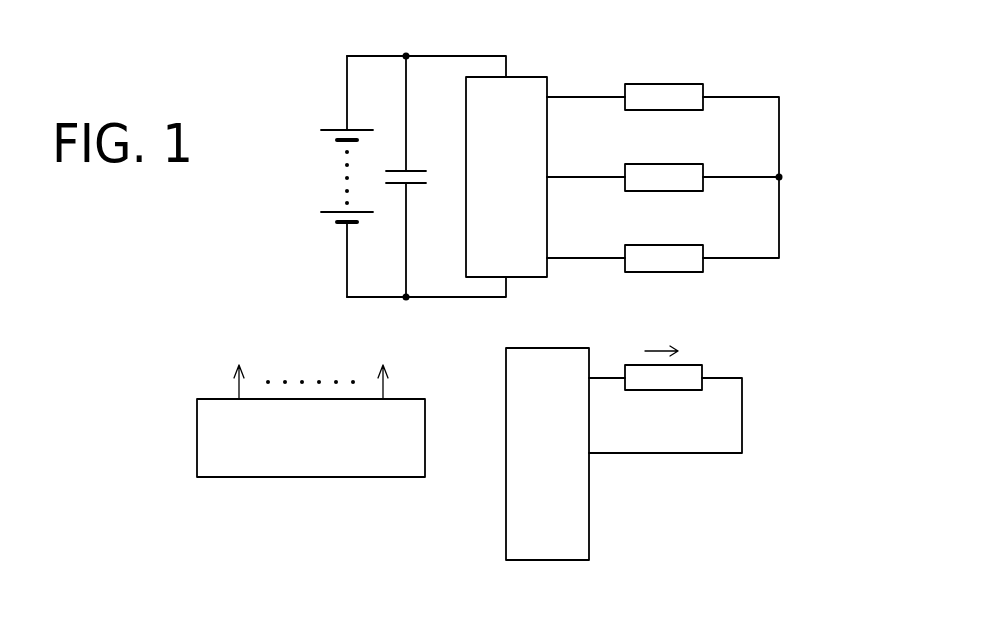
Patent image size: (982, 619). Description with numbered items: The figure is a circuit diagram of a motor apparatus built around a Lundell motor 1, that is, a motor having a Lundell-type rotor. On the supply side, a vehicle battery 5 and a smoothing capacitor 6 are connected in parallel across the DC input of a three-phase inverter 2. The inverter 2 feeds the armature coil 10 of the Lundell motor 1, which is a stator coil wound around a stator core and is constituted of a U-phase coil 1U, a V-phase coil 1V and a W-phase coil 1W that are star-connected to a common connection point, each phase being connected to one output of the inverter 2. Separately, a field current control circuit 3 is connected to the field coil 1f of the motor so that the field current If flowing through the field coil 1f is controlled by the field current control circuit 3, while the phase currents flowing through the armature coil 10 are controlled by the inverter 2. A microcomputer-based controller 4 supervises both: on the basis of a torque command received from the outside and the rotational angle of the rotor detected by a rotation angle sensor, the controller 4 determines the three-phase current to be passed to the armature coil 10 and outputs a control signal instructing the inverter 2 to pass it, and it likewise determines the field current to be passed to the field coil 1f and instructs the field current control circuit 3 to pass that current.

The armature coil 10 is at (749, 37).
The Lundell motor 1 is at (688, 157).
The U-phase coil 1U is at (687, 90).
The V-phase coil 1V is at (687, 170).
The W-phase coil 1W is at (687, 250).
The field coil 1f is at (692, 365).
The three-phase inverter 2 is at (524, 77).
The field current control circuit 3 is at (568, 348).
The controller 4 is at (425, 430).
The vehicle battery 5 is at (328, 170).
The smoothing capacitor 6 is at (416, 168).